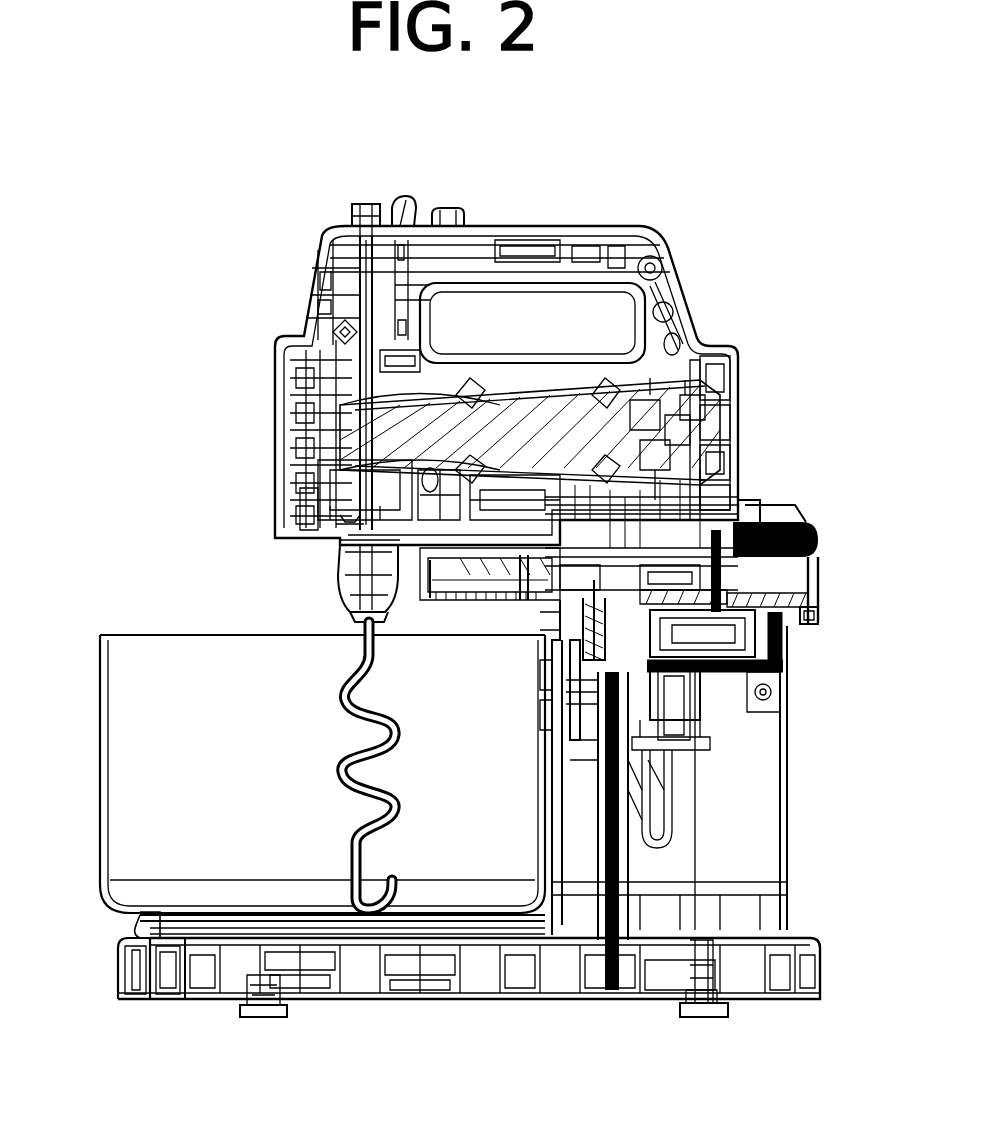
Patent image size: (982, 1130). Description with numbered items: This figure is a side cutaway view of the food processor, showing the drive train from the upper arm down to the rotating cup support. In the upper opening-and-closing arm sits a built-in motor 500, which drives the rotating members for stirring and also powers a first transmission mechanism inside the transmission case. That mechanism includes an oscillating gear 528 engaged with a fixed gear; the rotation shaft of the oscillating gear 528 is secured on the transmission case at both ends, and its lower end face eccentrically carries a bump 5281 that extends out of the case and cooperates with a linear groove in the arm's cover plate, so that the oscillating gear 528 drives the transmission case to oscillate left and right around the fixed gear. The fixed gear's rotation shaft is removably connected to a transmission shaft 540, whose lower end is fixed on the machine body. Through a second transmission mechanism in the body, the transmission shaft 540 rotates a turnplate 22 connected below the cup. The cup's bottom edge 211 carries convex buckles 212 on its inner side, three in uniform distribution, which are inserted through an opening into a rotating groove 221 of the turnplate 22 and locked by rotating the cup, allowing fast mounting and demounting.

The motor 500 is at (276, 441).
The oscillating gear 528 is at (820, 604).
The bump 5281 is at (786, 643).
The transmission shaft 540 is at (618, 878).
The turnplate 22 is at (140, 925).
The bottom edge 211 is at (160, 945).
The convex buckle 212 is at (187, 957).
The rotating groove 221 is at (243, 990).